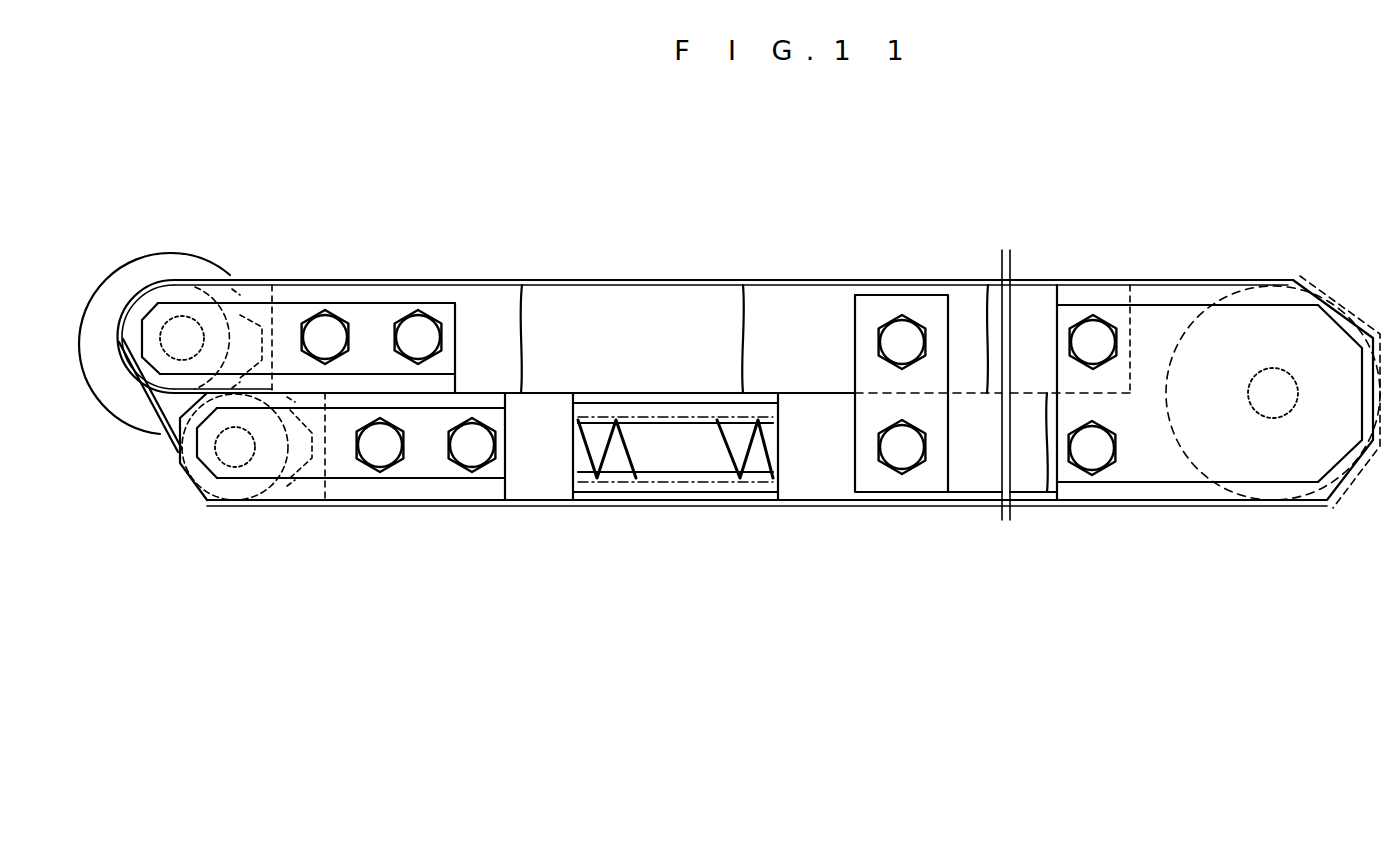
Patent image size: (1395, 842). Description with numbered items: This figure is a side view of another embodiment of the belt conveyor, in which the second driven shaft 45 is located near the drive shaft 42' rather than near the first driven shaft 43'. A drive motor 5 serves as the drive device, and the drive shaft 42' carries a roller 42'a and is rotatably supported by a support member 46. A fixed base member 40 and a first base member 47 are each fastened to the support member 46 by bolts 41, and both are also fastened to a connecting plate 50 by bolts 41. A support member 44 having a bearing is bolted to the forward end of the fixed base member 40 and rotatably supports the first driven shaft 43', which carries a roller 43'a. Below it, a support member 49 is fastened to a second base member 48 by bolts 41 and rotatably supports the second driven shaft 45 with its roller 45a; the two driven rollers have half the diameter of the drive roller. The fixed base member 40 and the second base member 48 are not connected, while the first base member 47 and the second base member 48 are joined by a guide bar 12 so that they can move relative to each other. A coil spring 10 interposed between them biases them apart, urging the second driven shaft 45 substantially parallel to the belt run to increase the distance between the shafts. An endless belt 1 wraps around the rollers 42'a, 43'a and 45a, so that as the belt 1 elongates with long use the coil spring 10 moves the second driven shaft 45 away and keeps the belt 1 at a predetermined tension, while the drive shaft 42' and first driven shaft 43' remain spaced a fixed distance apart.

The endless belt 1 is at (481, 284).
The drive motor 5 is at (135, 262).
The coil spring 10 is at (613, 458).
The guide bar 12 is at (700, 490).
The fixed base member 40 is at (568, 306).
The bolts 41 is at (340, 327).
The drive shaft 42' is at (195, 286).
The roller 42'a is at (257, 303).
The first driven shaft 43' is at (1279, 322).
The roller 43'a is at (1273, 352).
The support member 44 is at (333, 295).
The second driven shaft 45 is at (233, 478).
The roller 45a is at (298, 480).
The support member 46 is at (1158, 297).
The first base member 47 is at (983, 483).
The second base member 48 is at (540, 486).
The support member 49 is at (478, 493).
The connecting plate 50 is at (928, 310).